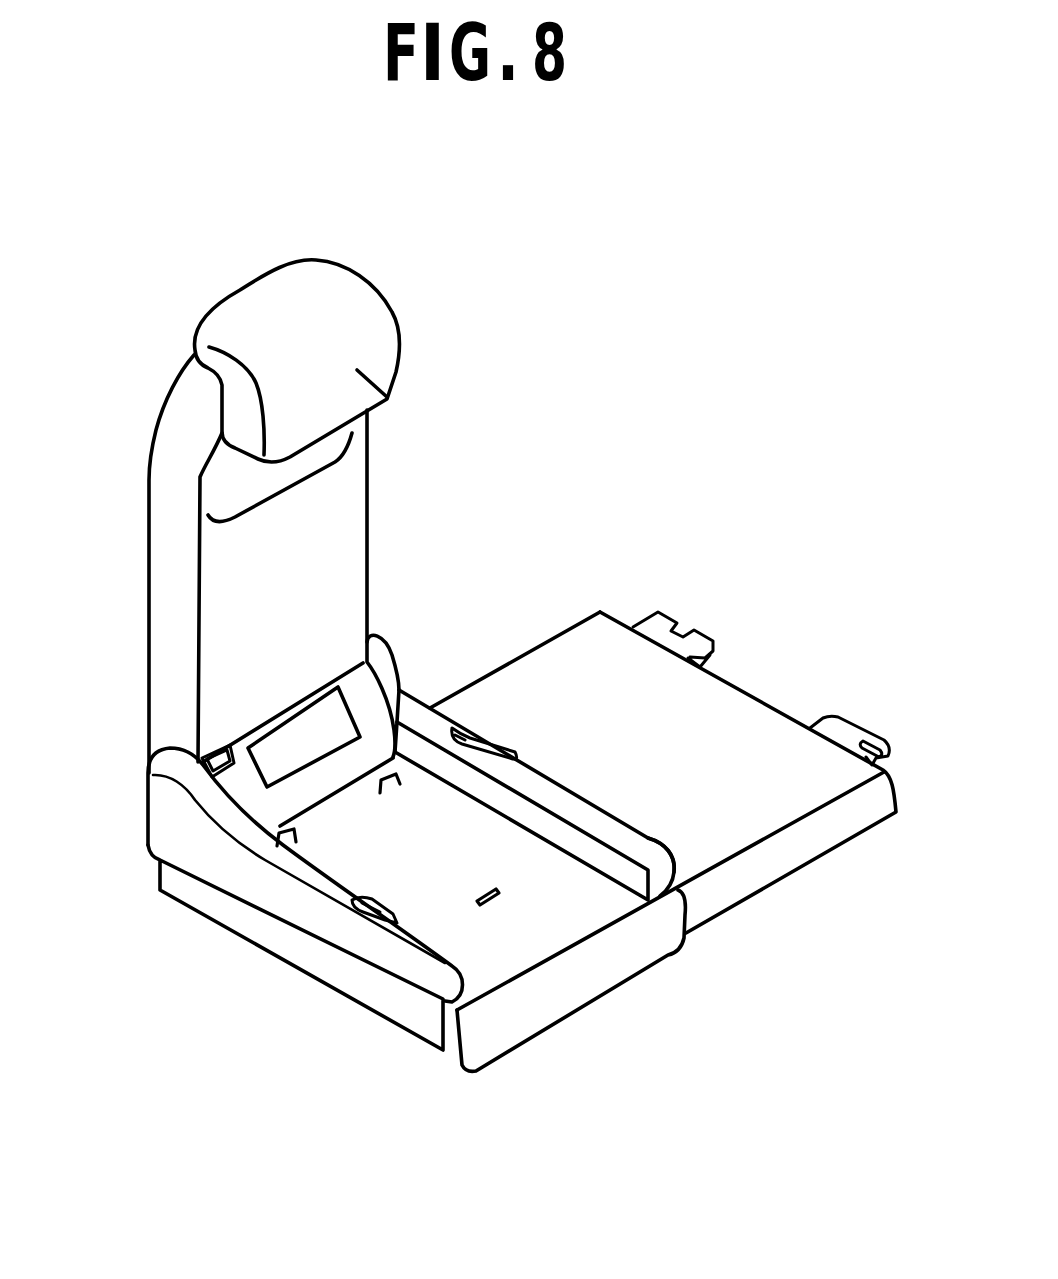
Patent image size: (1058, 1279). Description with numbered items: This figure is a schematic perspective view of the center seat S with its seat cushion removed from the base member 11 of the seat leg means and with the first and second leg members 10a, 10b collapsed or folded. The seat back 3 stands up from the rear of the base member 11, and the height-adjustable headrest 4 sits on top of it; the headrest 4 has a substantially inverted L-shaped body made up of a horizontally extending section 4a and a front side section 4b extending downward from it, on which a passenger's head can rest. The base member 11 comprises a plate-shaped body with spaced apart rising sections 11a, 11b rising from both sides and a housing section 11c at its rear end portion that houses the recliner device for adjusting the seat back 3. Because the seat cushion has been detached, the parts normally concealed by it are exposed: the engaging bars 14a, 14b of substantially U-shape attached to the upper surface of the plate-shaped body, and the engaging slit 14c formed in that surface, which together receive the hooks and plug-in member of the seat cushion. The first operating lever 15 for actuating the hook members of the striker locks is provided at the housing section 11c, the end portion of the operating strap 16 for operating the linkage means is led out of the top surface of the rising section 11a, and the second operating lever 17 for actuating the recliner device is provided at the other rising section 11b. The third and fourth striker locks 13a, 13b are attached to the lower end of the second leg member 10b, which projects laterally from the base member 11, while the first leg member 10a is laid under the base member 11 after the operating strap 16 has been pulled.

The seat back 3 is at (322, 555).
The headrest 4 is at (376, 268).
The horizontally extending section 4a is at (270, 287).
The front side section 4b is at (387, 397).
The center seat S is at (563, 512).
The first leg member 10a is at (352, 983).
The second leg member 10b is at (718, 713).
The base member 11 is at (546, 882).
The rising section 11a is at (279, 862).
The rising section 11b is at (630, 835).
The housing section 11c is at (360, 702).
The third striker lock 13a is at (843, 735).
The fourth striker lock 13b is at (655, 618).
The engaging bar 14a is at (277, 835).
The engaging bar 14b is at (395, 768).
The engaging slit 14c is at (487, 890).
The first operating lever 15 is at (222, 752).
The operating strap 16 is at (348, 896).
The second operating lever 17 is at (487, 742).